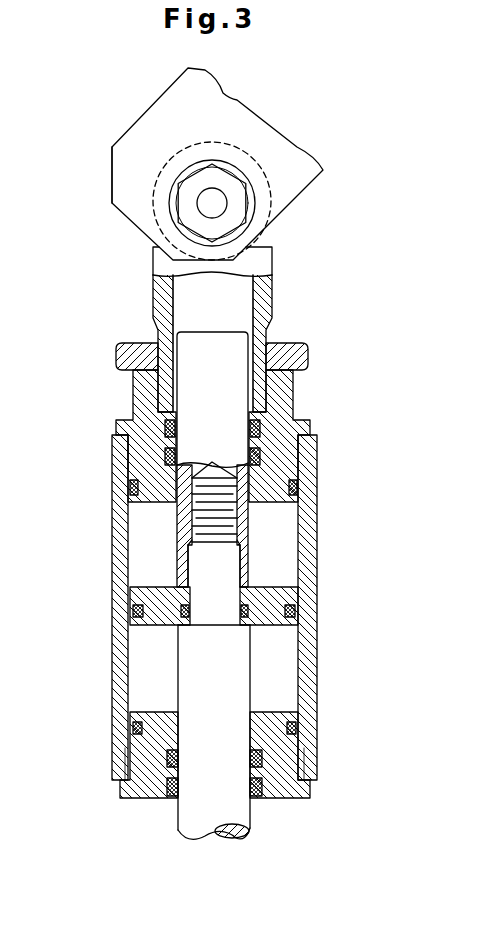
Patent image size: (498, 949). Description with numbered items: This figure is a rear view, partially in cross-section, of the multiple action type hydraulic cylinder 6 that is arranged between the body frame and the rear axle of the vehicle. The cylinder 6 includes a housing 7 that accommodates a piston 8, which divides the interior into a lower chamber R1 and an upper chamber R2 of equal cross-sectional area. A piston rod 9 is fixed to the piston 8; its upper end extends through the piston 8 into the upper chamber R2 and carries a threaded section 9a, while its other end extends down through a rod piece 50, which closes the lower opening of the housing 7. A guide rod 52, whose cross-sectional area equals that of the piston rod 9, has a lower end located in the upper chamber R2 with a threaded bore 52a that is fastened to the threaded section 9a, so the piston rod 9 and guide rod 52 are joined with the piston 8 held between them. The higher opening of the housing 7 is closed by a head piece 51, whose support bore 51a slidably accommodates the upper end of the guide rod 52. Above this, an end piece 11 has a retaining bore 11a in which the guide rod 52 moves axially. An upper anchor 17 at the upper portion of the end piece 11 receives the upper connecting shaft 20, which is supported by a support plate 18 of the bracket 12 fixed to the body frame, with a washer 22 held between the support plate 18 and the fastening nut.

The bracket 12 is at (150, 107).
The support plate 18 is at (113, 195).
The upper anchor 17 is at (231, 148).
The upper connecting shaft 20 is at (204, 194).
The washer 22 is at (210, 182).
The end piece 11 is at (273, 258).
The retaining bore 11a is at (173, 299).
The head piece 51 is at (293, 396).
The support bore 51a is at (176, 441).
The hydraulic cylinder 6 is at (236, 607).
The housing 7 is at (318, 574).
The threaded section 9a is at (177, 510).
The guide rod 52 is at (239, 525).
The threaded bore 52a is at (201, 527).
The upper chamber R2 is at (169, 574).
The piston 8 is at (273, 625).
The lower chamber R1 is at (169, 689).
The rod piece 50 is at (141, 798).
The piston rod 9 is at (250, 808).